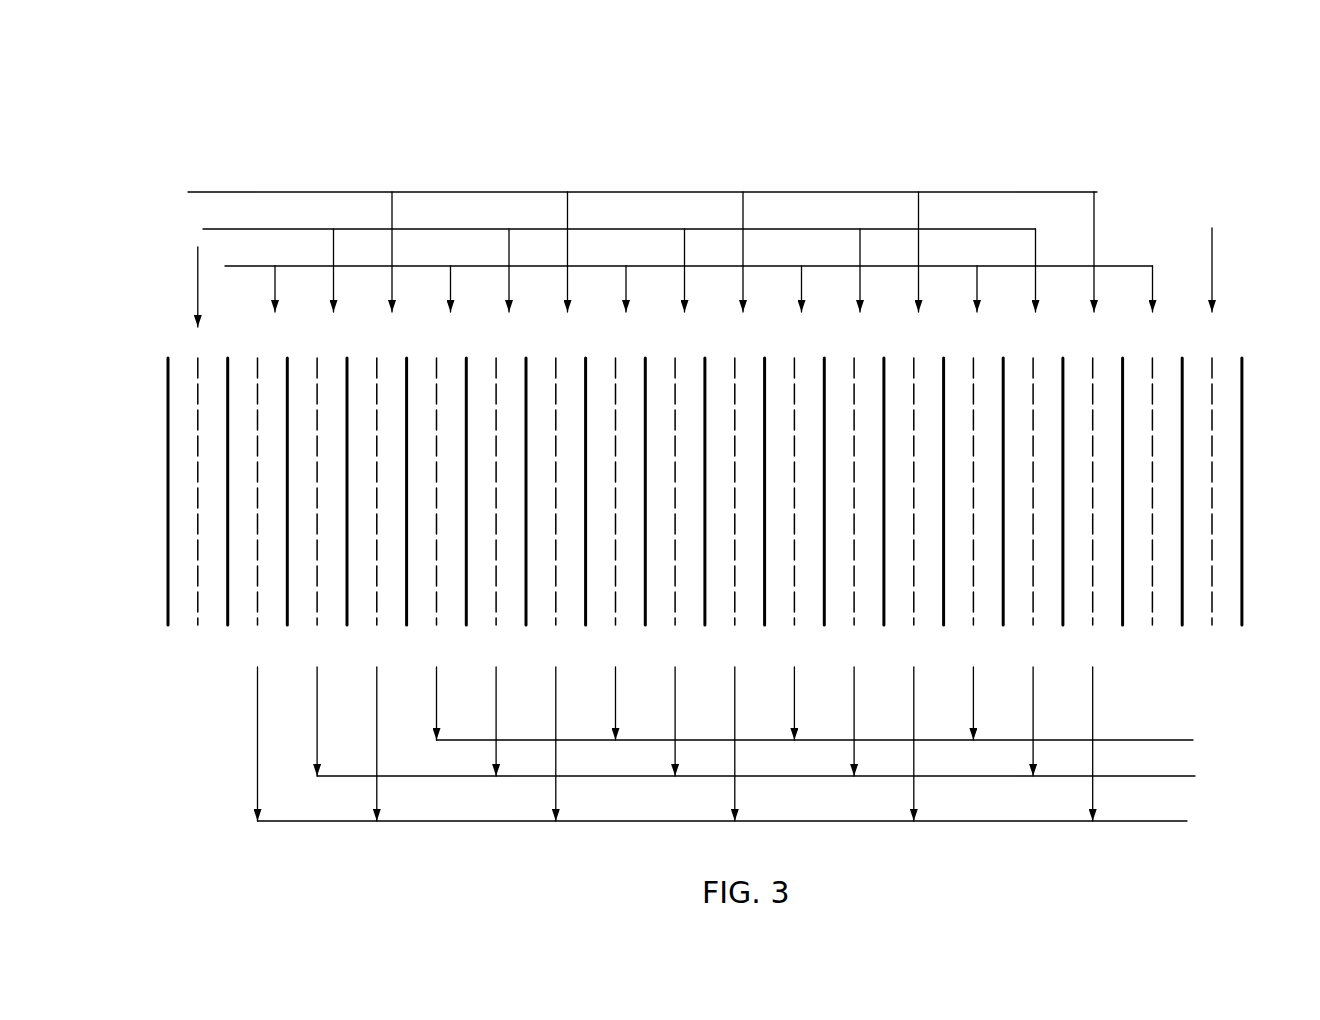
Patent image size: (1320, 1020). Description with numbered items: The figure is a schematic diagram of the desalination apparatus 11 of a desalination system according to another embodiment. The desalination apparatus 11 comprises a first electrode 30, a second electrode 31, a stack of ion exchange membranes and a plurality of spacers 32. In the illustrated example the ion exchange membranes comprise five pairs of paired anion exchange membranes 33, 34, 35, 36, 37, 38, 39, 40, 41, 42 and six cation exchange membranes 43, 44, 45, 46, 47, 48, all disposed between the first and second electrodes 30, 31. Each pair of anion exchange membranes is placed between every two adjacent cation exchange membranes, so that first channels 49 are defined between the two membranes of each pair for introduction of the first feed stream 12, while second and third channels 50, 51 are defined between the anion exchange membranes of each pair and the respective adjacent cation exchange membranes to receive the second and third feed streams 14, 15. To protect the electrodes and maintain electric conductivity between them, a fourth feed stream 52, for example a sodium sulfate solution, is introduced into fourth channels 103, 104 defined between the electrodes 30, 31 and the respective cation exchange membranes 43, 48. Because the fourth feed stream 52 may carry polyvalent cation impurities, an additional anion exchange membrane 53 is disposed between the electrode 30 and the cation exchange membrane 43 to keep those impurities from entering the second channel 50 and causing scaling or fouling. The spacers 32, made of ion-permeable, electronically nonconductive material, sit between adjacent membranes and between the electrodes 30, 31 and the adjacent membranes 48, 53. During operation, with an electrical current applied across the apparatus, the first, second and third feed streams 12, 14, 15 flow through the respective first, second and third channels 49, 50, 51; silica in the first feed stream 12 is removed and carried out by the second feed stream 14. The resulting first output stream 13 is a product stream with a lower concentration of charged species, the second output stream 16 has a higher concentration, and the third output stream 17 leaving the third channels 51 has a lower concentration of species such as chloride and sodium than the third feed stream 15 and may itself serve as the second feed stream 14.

The desalination apparatus 11 is at (1113, 152).
The first feed stream 12 is at (277, 192).
The first output stream 13 is at (1148, 821).
The second feed stream 14 is at (297, 229).
The third feed stream 15 is at (243, 265).
The second output stream 16 is at (1143, 776).
The third output stream 17 is at (1125, 740).
The first electrode 30 is at (167, 582).
The second electrode 31 is at (1243, 610).
The spacers 32 is at (258, 390).
The anion exchange membrane 33 is at (346, 570).
The anion exchange membrane 34 is at (406, 570).
The anion exchange membrane 35 is at (525, 570).
The anion exchange membrane 36 is at (585, 570).
The anion exchange membrane 37 is at (704, 570).
The anion exchange membrane 38 is at (764, 570).
The anion exchange membrane 39 is at (883, 570).
The anion exchange membrane 40 is at (943, 570).
The anion exchange membrane 41 is at (1062, 570).
The anion exchange membrane 42 is at (1122, 570).
The cation exchange membrane 43 is at (286, 570).
The cation exchange membrane 44 is at (465, 570).
The cation exchange membrane 45 is at (644, 570).
The cation exchange membrane 46 is at (823, 570).
The cation exchange membrane 47 is at (1002, 570).
The cation exchange membrane 48 is at (1182, 610).
The first channels 49 is at (377, 390).
The second channels 50 is at (317, 390).
The third channels 51 is at (436, 390).
The fourth feed stream 52 is at (197, 295).
The additional anion exchange membrane 53 is at (227, 585).
The fourth channel 103 is at (182, 382).
The fourth channel 104 is at (1225, 380).